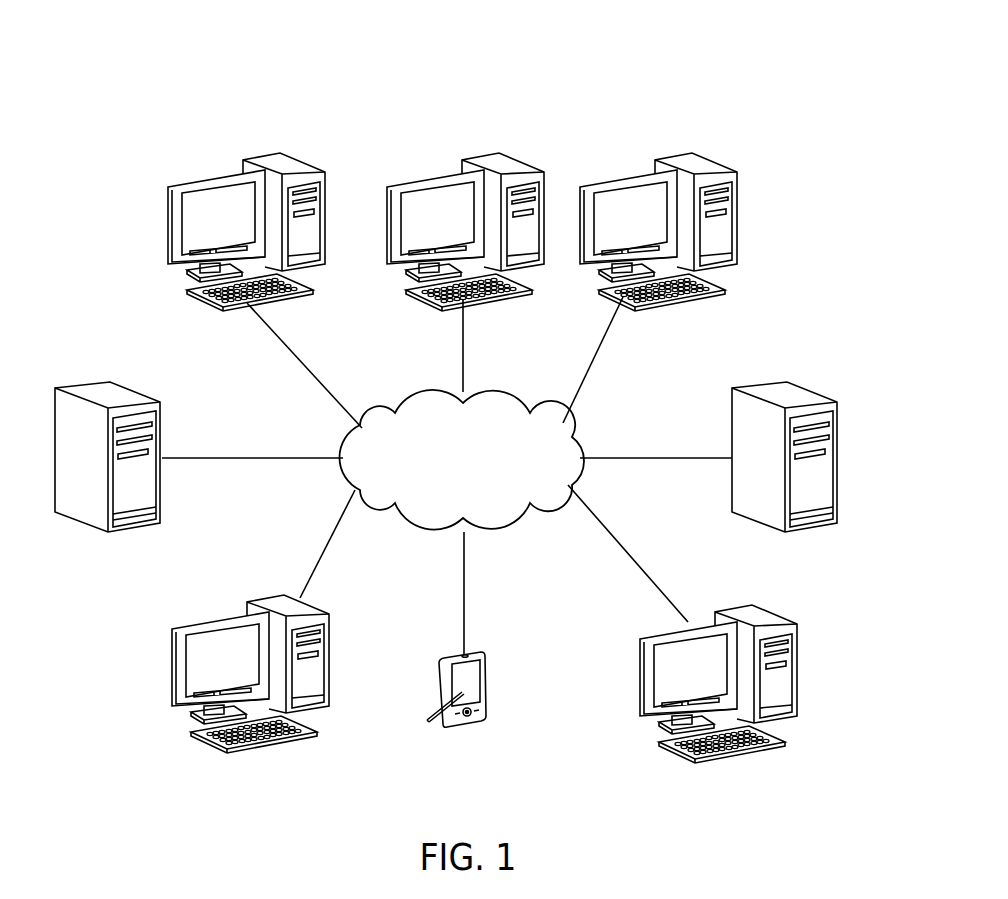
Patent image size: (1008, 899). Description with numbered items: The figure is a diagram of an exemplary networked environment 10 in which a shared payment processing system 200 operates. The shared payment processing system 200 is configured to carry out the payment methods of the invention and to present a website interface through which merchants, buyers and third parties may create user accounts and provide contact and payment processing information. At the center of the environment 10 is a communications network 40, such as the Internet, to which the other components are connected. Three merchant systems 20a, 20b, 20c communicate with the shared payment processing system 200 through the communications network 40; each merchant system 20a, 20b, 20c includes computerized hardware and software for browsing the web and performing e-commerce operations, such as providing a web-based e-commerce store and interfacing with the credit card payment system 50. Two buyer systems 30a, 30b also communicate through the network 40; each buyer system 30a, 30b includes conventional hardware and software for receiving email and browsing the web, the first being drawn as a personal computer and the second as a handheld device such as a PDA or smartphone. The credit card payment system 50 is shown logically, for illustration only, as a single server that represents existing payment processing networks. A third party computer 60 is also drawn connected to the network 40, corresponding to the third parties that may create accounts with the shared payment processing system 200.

The networked environment 10 is at (765, 62).
The merchant system 20a is at (263, 153).
The merchant system 20b is at (482, 151).
The merchant system 20c is at (677, 151).
The buyer system 30a is at (172, 643).
The buyer system 30b is at (486, 678).
The communications network 40 is at (577, 437).
The credit card payment system 50 is at (88, 382).
The third party computer 60 is at (797, 645).
The shared payment processing system 200 is at (800, 385).